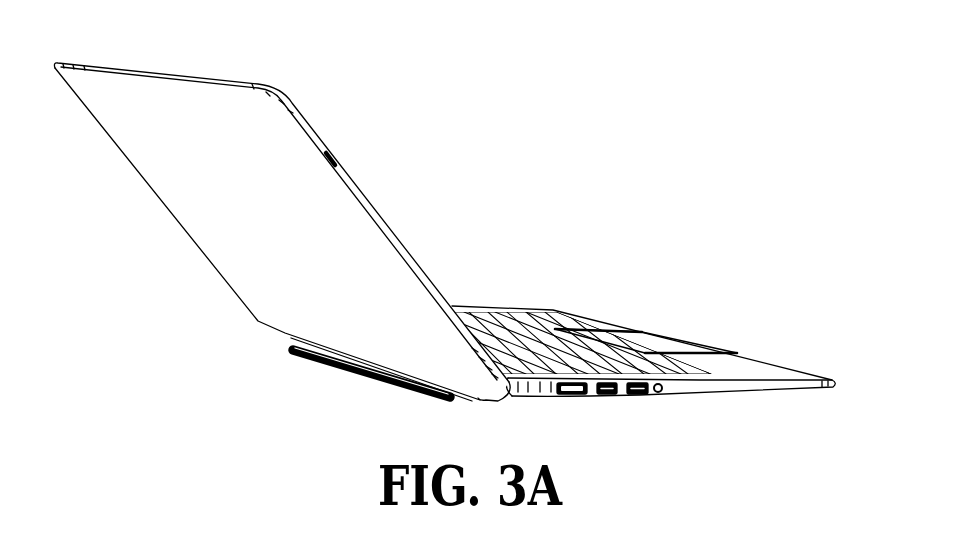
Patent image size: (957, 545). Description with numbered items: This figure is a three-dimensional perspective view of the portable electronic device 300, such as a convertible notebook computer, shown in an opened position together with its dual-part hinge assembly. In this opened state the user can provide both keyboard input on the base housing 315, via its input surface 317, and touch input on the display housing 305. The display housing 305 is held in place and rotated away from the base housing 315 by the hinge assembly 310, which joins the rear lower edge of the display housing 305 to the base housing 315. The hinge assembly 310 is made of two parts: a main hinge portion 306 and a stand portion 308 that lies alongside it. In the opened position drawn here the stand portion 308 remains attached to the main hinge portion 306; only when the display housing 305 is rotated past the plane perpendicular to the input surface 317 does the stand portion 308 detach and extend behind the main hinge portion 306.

The portable electronic device 300 is at (440, 110).
The display housing 305 is at (186, 233).
The main hinge portion 306 is at (479, 402).
The stand portion 308 is at (417, 394).
The hinge assembly 310 is at (282, 342).
The base housing 315 is at (773, 366).
The input surface 317 is at (533, 310).